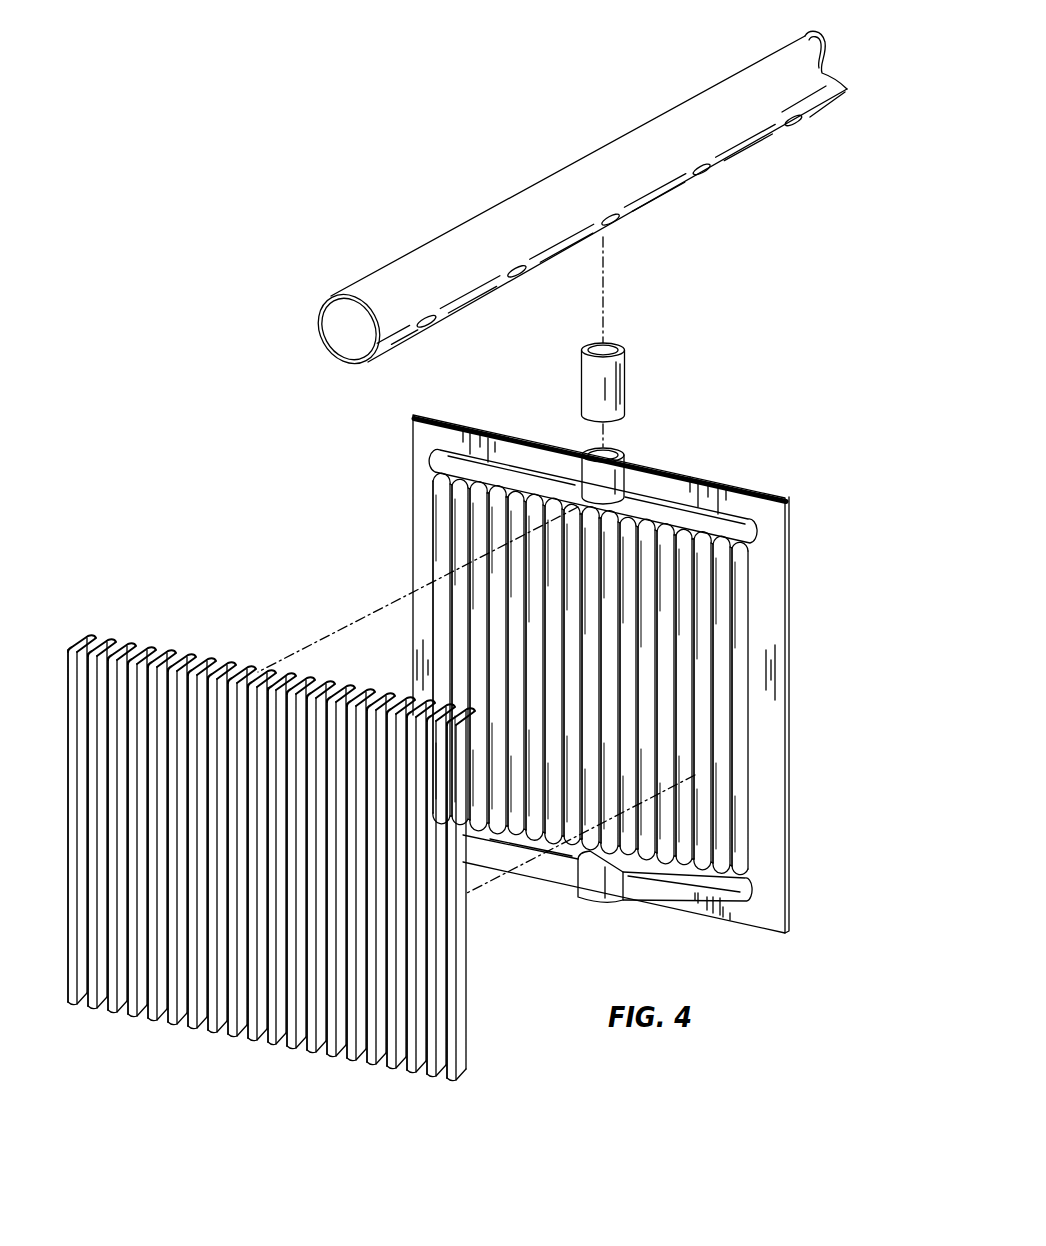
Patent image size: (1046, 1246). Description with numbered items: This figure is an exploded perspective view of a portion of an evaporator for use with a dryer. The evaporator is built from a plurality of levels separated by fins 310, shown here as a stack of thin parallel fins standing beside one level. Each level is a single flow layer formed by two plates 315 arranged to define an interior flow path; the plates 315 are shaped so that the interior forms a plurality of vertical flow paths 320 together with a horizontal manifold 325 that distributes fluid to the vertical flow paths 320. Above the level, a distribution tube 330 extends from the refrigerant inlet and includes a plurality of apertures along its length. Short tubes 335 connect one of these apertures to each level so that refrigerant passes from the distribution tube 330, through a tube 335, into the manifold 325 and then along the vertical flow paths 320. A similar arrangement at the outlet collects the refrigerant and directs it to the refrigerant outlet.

The fins 310 is at (453, 1033).
The plates 315 is at (740, 486).
The vertical flow paths 320 is at (443, 525).
The horizontal manifold 325 is at (450, 452).
The distribution tube 330 is at (487, 230).
The tubes 335 is at (590, 388).